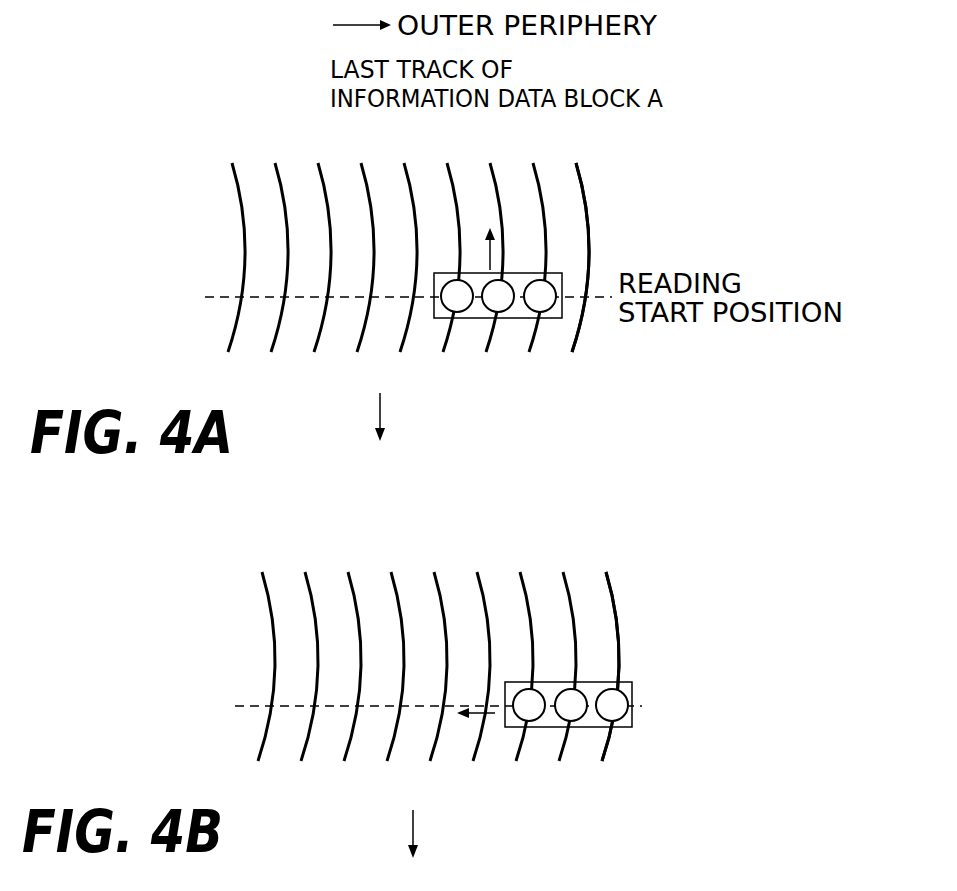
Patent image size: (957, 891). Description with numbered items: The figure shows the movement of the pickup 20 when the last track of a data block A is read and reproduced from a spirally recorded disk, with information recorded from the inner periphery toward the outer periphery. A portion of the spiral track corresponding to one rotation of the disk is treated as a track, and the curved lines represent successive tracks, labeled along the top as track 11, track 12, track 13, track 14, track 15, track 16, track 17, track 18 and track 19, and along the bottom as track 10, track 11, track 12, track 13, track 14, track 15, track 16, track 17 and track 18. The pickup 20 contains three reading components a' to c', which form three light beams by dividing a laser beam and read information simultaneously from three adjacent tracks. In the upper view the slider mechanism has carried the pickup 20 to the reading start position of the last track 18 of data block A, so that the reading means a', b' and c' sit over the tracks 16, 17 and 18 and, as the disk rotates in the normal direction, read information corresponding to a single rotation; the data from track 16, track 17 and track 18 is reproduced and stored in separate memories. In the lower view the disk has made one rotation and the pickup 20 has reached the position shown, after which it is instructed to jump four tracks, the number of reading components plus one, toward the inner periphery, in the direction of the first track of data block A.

In FIG. 4A, the track 10 is at (224, 274).
In FIG. 4B, the track 10 is at (254, 683).
In FIG. 4A, the track 11 is at (249, 257).
In FIG. 4B, the track 11 is at (279, 666).
In FIG. 4A, the track 12 is at (293, 257).
In FIG. 4B, the track 12 is at (323, 666).
In FIG. 4A, the track 13 is at (337, 257).
In FIG. 4B, the track 13 is at (367, 666).
In FIG. 4A, the track 14 is at (381, 257).
In FIG. 4B, the track 14 is at (411, 666).
In FIG. 4A, the track 15 is at (424, 257).
In FIG. 4B, the track 15 is at (454, 666).
In FIG. 4A, the track 16 is at (468, 257).
In FIG. 4B, the track 16 is at (498, 666).
In FIG. 4A, the track 17 is at (510, 257).
In FIG. 4B, the track 17 is at (540, 666).
In FIG. 4A, the last track of data block A 18 is at (553, 257).
In FIG. 4B, the last track of data block A 18 is at (583, 666).
In FIG. 4A, the track 19 is at (573, 240).
In FIG. 4B, the track 19 is at (603, 649).
In FIG. 4A, the pickup 20 is at (443, 275).
In FIG. 4B, the pickup 20 is at (513, 682).